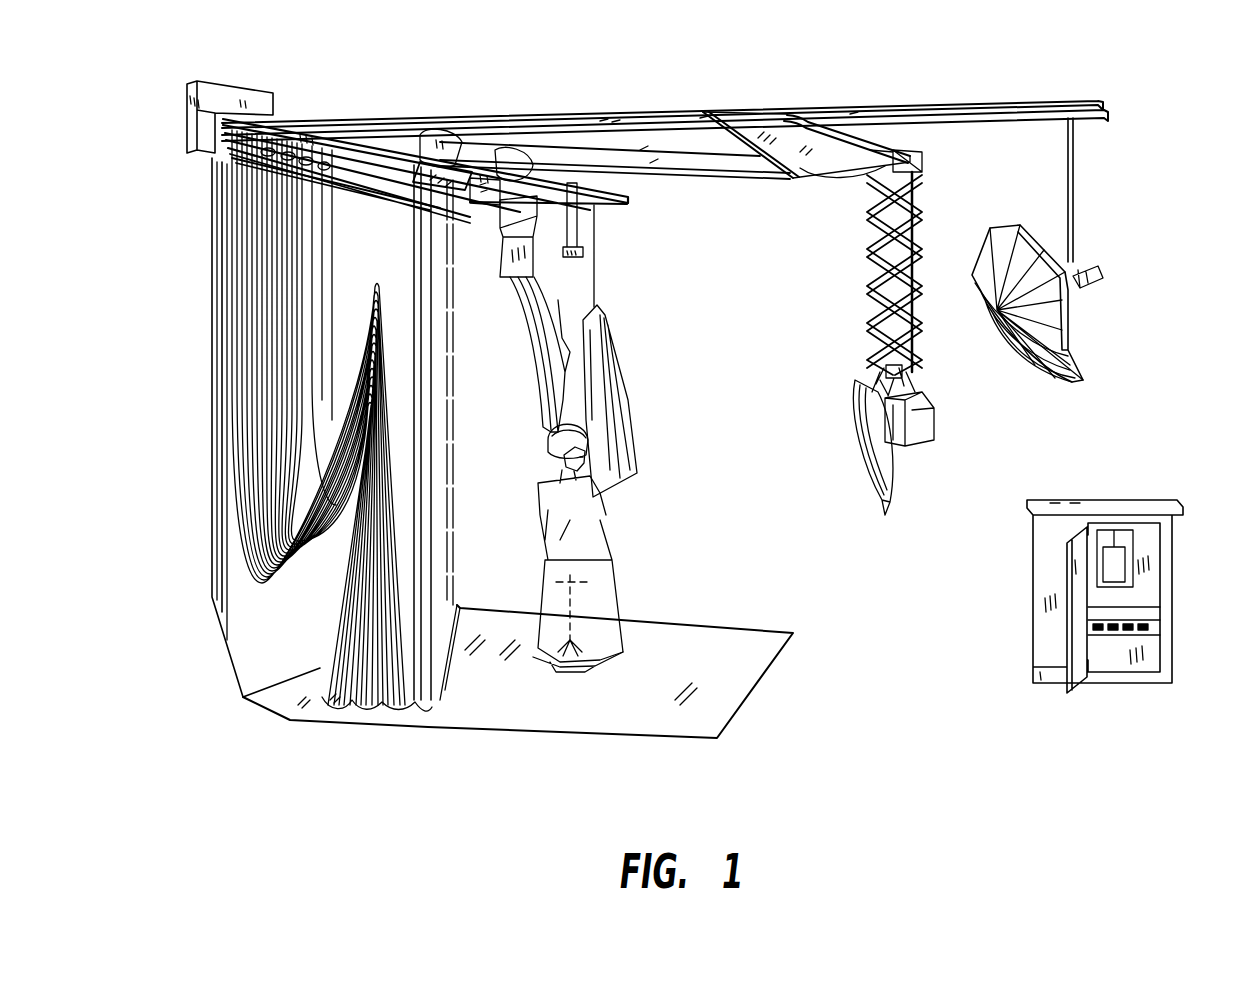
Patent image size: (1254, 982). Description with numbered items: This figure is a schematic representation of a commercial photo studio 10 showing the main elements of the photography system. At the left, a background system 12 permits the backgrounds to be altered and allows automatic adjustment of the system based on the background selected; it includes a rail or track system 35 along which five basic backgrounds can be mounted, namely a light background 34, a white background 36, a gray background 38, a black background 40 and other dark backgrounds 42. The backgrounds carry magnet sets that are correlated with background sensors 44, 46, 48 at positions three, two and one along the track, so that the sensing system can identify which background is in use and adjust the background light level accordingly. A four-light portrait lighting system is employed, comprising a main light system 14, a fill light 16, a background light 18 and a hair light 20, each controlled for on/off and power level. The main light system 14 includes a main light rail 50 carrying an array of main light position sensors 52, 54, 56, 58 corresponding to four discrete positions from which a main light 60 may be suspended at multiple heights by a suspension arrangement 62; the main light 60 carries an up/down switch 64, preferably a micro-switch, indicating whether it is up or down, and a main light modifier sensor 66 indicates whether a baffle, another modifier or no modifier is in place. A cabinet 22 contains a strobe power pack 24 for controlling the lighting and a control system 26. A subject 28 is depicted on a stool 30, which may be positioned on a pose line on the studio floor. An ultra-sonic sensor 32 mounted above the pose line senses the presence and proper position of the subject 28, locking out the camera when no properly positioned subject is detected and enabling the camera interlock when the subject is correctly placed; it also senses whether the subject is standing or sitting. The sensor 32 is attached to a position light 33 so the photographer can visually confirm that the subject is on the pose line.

The commercial photo studio 10 is at (1126, 103).
The background system 12 is at (162, 188).
The main light system 14 is at (930, 346).
The fill light 16 is at (1031, 228).
The background light 18 is at (500, 147).
The hair light 20 is at (440, 140).
The cabinet 22 is at (1188, 621).
The strobe power pack 24 is at (1113, 640).
The control system 26 is at (1115, 553).
The subject 28 is at (590, 540).
The stool 30 is at (605, 607).
The ultra-sonic sensor 32 is at (584, 250).
The position light 33 is at (567, 228).
The light background 34 is at (630, 397).
The track system 35 is at (337, 200).
The white background 36 is at (535, 395).
The gray background 38 is at (425, 705).
The black background 40 is at (318, 717).
The other dark background 42 is at (460, 610).
The background sensor 44 is at (408, 165).
The background sensor 46 is at (396, 165).
The background sensor 48 is at (358, 160).
The main light rail 50 is at (660, 110).
The main light position sensor 52 is at (921, 153).
The main light position sensor 54 is at (835, 128).
The main light position sensor 56 is at (745, 110).
The main light position sensor 58 is at (557, 97).
The main light 60 is at (920, 412).
The suspension arrangement 62 is at (926, 268).
The up/down switch 64 is at (882, 362).
The main light modifier sensor 66 is at (870, 452).